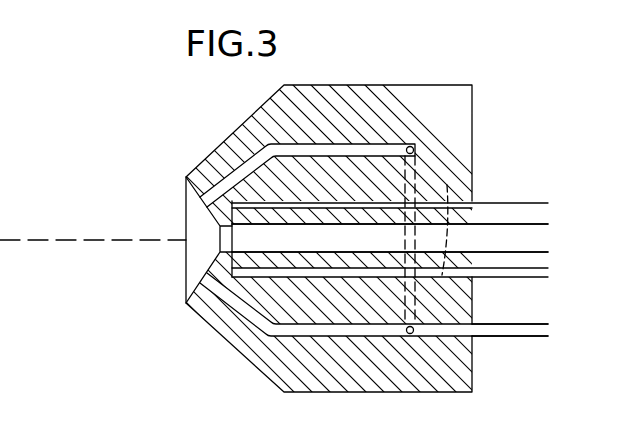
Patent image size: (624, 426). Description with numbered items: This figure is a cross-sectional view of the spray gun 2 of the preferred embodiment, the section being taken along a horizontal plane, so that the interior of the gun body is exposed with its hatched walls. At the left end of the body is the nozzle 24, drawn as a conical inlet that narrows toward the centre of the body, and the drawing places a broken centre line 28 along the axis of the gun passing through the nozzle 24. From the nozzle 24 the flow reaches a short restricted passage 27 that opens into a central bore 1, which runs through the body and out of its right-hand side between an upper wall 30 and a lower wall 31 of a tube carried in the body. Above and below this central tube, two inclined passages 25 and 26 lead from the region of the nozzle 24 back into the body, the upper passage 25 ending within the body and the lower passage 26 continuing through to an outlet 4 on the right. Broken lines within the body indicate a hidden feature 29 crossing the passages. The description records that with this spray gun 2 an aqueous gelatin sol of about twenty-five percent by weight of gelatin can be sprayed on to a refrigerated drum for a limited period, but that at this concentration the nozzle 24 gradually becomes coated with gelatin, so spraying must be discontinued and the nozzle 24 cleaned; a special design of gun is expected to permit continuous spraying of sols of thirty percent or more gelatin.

The core / central bore 1 is at (537, 243).
The spray gun 2 is at (488, 129).
The outlet channel 4 is at (512, 338).
The nozzle 24 is at (194, 207).
The upper channel 25 is at (203, 194).
The lower channel 26 is at (201, 302).
The throat 27 is at (212, 246).
The axis 28 is at (64, 236).
The hidden bore 29 is at (438, 203).
The upper tube wall 30 is at (536, 202).
The lower tube wall 31 is at (537, 279).